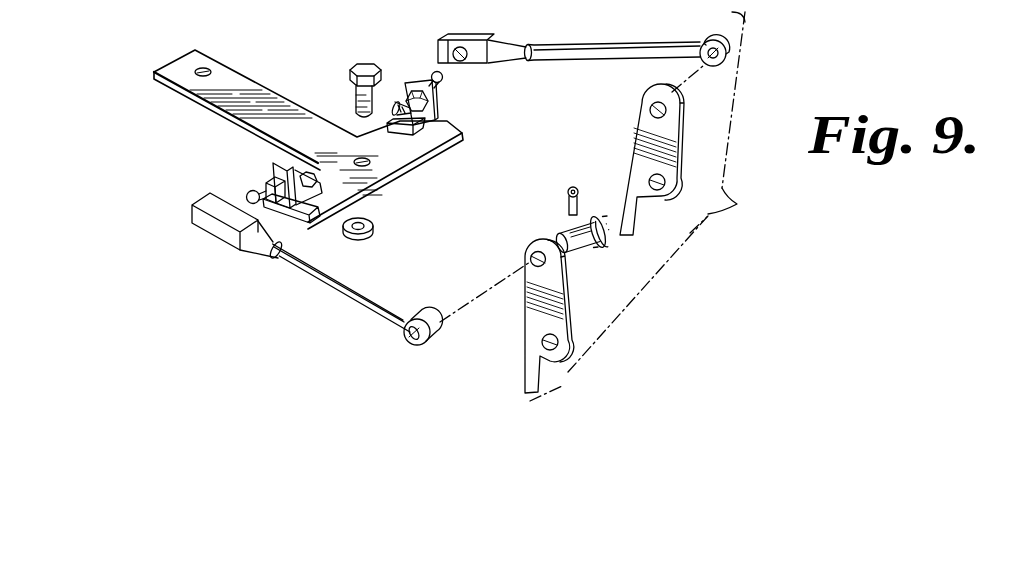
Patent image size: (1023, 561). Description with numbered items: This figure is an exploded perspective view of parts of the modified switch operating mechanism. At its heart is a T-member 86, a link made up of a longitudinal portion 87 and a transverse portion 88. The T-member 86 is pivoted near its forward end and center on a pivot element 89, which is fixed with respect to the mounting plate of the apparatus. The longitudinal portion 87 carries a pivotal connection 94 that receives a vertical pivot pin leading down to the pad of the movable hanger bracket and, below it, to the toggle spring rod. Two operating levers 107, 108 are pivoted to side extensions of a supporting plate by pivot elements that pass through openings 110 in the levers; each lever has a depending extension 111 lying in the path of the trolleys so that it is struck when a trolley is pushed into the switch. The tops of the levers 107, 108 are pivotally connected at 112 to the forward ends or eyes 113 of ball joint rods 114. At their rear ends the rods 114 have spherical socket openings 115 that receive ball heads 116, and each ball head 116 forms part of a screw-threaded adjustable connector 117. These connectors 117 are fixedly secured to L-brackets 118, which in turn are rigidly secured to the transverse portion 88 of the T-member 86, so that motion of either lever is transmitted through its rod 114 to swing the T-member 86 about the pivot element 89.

The T-member 86 is at (283, 103).
The longitudinal portion 87 is at (245, 108).
The transverse portion 88 is at (410, 152).
The pivotal connection 94 is at (208, 70).
The pivot element 89 is at (364, 92).
The spherical socket opening 115 is at (455, 48).
The ball joint rod 114 is at (607, 47).
The eye 113 is at (717, 35).
The ball head 116 is at (249, 191).
The screw-threaded adjustable connector 117 is at (308, 175).
The L-bracket 118 is at (317, 221).
The operating lever 107 is at (643, 129).
The operating lever 108 is at (557, 303).
The opening 110 is at (648, 178).
The depending extension 111 is at (630, 216).
The pivotal connection 112 is at (586, 248).